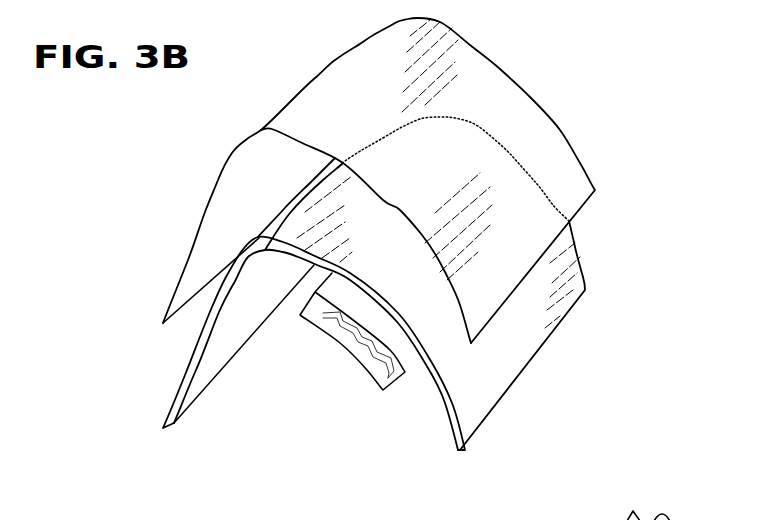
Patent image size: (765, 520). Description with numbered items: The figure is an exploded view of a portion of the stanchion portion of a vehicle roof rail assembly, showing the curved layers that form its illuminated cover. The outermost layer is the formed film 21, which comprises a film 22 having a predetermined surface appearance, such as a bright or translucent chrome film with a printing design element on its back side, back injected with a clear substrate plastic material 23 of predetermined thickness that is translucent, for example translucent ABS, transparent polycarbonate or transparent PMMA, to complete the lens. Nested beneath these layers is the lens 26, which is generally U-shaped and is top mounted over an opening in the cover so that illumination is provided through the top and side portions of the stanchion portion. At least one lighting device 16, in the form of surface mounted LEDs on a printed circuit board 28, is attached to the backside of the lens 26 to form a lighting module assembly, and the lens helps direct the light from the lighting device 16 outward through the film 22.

The formed film 21 is at (624, 224).
The film 22 is at (540, 142).
The clear substrate plastic material 23 is at (533, 322).
The lens 26 is at (350, 298).
The lighting device 16 is at (344, 362).
The printed circuit board 28 is at (378, 363).